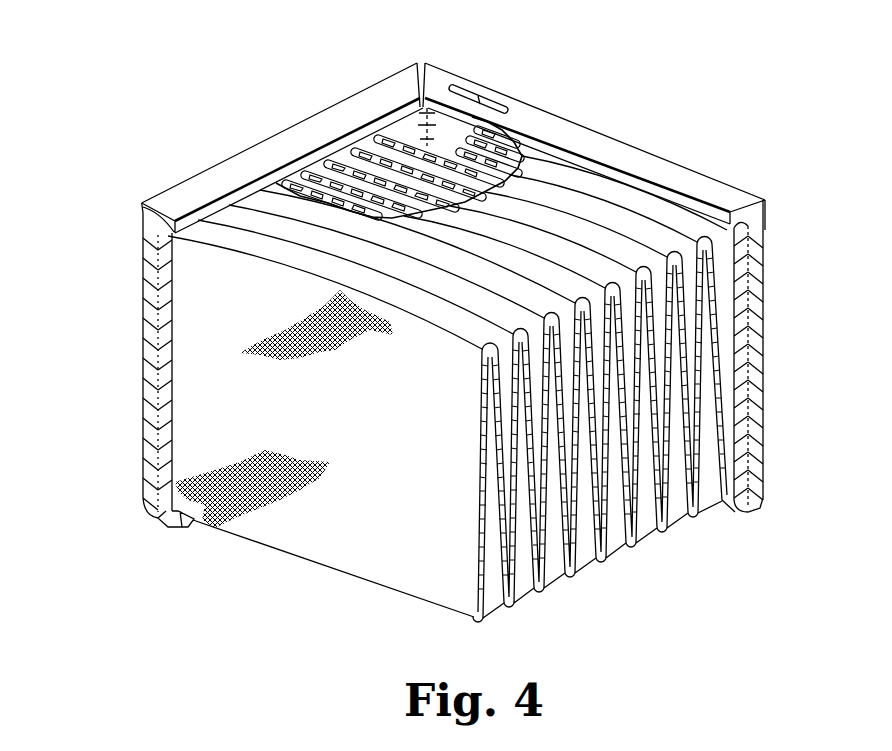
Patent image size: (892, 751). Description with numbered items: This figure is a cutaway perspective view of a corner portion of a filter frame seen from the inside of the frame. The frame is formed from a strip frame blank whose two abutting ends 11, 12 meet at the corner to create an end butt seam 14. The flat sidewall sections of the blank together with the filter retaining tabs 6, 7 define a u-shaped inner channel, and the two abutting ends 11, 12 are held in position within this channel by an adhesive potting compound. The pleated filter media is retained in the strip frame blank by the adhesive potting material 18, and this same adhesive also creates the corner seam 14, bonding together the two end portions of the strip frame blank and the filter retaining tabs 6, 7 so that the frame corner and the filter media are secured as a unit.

The filter retaining tab 6 is at (595, 142).
The filter retaining tab 7 is at (645, 362).
The abutting end of the strip frame blank 11 is at (282, 138).
The abutting end of the strip frame blank 12 is at (595, 119).
The end butt seam 14 is at (406, 79).
The adhesive potting material 18 is at (143, 355).